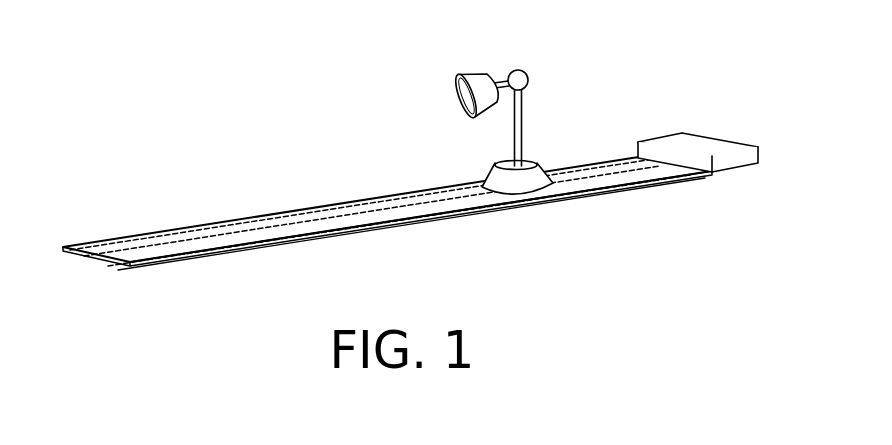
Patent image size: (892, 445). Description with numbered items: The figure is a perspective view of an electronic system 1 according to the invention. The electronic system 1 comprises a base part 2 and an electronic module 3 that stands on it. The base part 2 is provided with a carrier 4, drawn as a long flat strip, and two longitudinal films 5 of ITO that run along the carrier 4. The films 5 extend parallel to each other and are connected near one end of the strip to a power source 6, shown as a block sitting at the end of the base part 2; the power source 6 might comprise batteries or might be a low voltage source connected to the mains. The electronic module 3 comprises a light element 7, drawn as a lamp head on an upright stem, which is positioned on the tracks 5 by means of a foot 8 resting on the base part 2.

The electronic system 1 is at (180, 78).
The base part 2 is at (258, 198).
The electronic module 3 is at (535, 112).
The carrier 4 is at (183, 258).
The longitudinal films of ITO 5 is at (157, 250).
The power source 6 is at (702, 145).
The light element 7 is at (475, 77).
The foot 8 is at (520, 185).